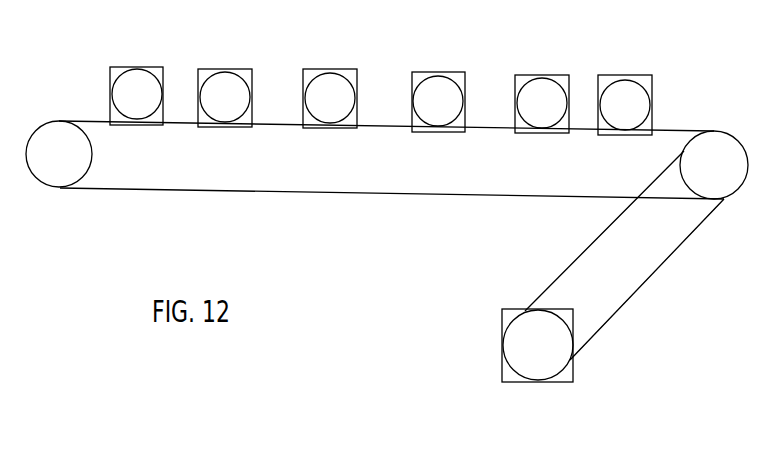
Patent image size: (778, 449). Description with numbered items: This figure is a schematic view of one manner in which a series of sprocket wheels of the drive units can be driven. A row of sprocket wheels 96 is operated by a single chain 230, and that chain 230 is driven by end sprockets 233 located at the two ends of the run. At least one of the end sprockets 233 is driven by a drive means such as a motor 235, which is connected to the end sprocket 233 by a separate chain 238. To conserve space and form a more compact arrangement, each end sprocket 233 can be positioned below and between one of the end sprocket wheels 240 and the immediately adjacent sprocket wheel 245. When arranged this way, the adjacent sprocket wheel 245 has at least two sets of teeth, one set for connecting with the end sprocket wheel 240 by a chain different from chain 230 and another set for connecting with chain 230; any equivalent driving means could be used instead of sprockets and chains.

The sprocket wheel 96 is at (335, 83).
The chain 230 is at (210, 193).
The end sprocket 233 is at (67, 189).
The motor 235 is at (565, 378).
The chain 238 is at (625, 308).
The end sprocket wheel 240 is at (137, 75).
The sprocket wheel 245 is at (233, 80).